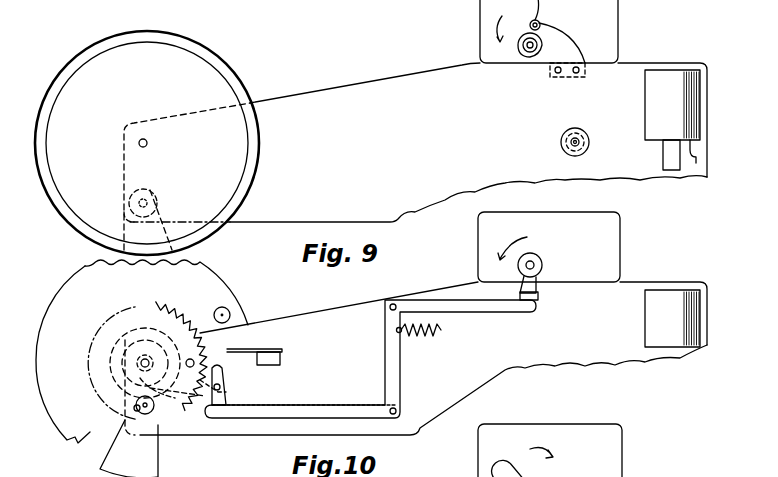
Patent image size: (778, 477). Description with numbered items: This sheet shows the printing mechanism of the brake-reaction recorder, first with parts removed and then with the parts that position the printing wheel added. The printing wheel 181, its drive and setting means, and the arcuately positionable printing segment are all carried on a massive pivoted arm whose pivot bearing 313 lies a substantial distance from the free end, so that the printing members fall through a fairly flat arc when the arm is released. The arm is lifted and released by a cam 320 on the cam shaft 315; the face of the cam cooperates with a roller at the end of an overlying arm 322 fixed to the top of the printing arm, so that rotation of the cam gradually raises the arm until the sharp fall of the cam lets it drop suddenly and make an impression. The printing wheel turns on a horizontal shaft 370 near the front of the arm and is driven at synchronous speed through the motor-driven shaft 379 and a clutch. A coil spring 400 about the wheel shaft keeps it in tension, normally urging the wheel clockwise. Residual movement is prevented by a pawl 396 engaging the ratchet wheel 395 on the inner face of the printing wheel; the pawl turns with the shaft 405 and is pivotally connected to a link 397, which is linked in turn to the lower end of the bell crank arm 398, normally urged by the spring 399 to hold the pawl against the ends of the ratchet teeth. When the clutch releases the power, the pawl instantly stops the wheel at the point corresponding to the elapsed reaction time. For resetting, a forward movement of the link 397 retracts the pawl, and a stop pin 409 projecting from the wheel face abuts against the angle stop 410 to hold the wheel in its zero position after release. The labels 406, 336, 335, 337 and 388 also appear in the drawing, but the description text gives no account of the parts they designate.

In FIG. 9, the printing wheel 181 is at (200, 73).
In FIG. 9, the horizontal shaft 370 is at (147, 145).
In FIG. 9, the cam 320 is at (516, 56).
In FIG. 9, the cam shaft 315 is at (530, 50).
In FIG. 9, the overlying arm 322 is at (565, 40).
In FIG. 9, the pivot bearing 313 is at (586, 132).
In FIG. 9, the motor-driven shaft 379 is at (561, 145).
In FIG. 10, the coil spring 400 is at (120, 331).
In FIG. 10, the ratchet wheel 406 is at (219, 436).
In FIG. 10, the bell crank arm 398 is at (402, 381).
In FIG. 10, the spring 399 is at (444, 329).
In FIG. 10, the stop pin 409 is at (230, 312).
In FIG. 10, the ratchet wheel 395 is at (182, 312).
In FIG. 10, the angle stop 410 is at (257, 348).
In FIG. 10, the pawl 396 is at (227, 378).
In FIG. 10, the shaft 405 is at (228, 393).
In FIG. 10, the link 397 is at (256, 414).
In FIG. 10, the slot 336 is at (560, 472).
In FIG. 10, the plate 335 is at (642, 466).
In FIG. 10, the pin 337 is at (681, 472).
In FIG. 10, the bracket 388 is at (721, 467).